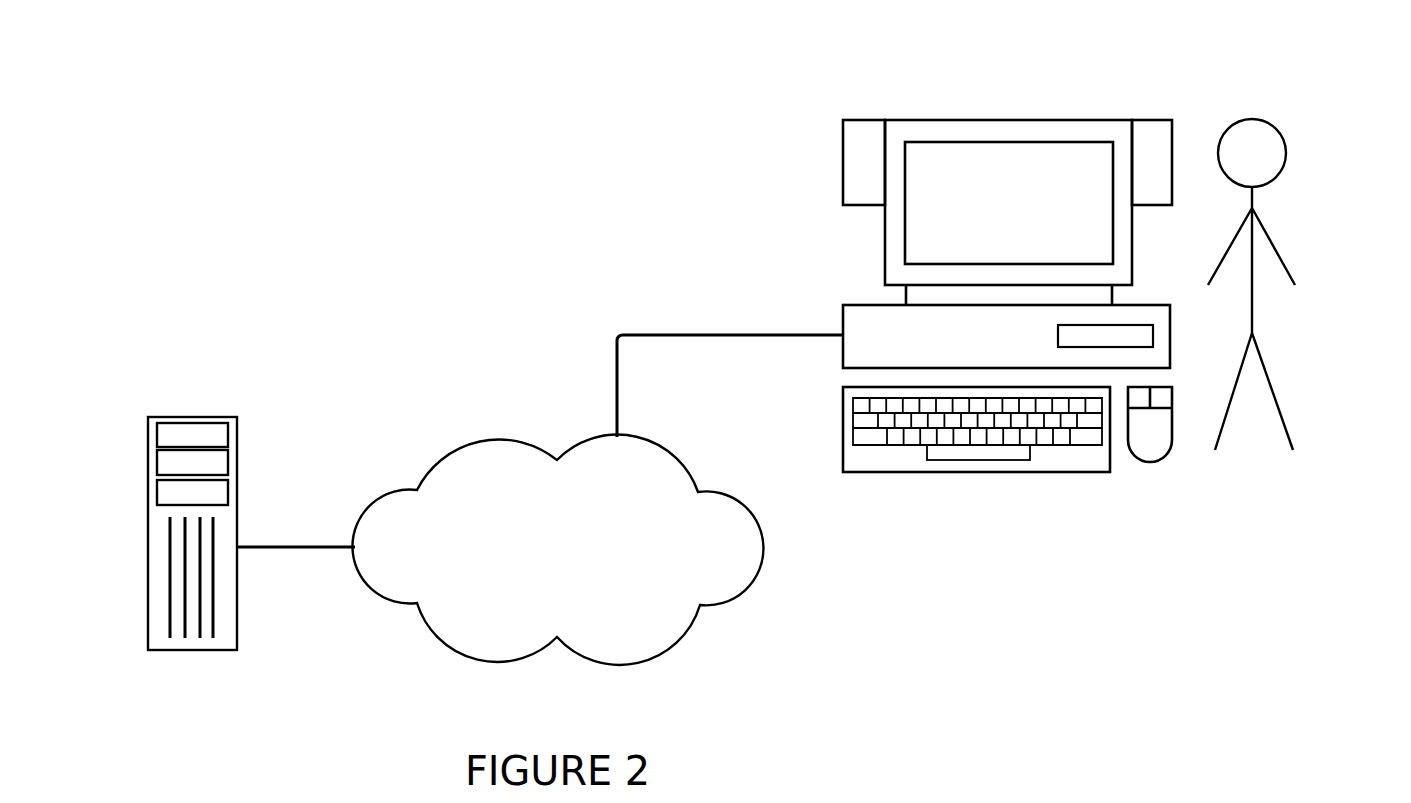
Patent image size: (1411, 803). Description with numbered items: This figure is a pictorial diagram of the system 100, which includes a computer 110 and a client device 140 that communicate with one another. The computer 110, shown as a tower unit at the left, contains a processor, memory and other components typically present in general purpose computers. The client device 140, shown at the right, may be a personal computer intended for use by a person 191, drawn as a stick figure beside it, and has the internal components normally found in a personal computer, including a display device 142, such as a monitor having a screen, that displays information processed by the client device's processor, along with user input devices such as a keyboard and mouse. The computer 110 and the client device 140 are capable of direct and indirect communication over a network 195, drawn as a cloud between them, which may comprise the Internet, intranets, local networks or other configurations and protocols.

The system 100 is at (258, 85).
The computer 110 is at (148, 428).
The network 195 is at (500, 437).
The client device 140 is at (830, 241).
The display device 142 is at (1028, 140).
The person 191 is at (1282, 222).